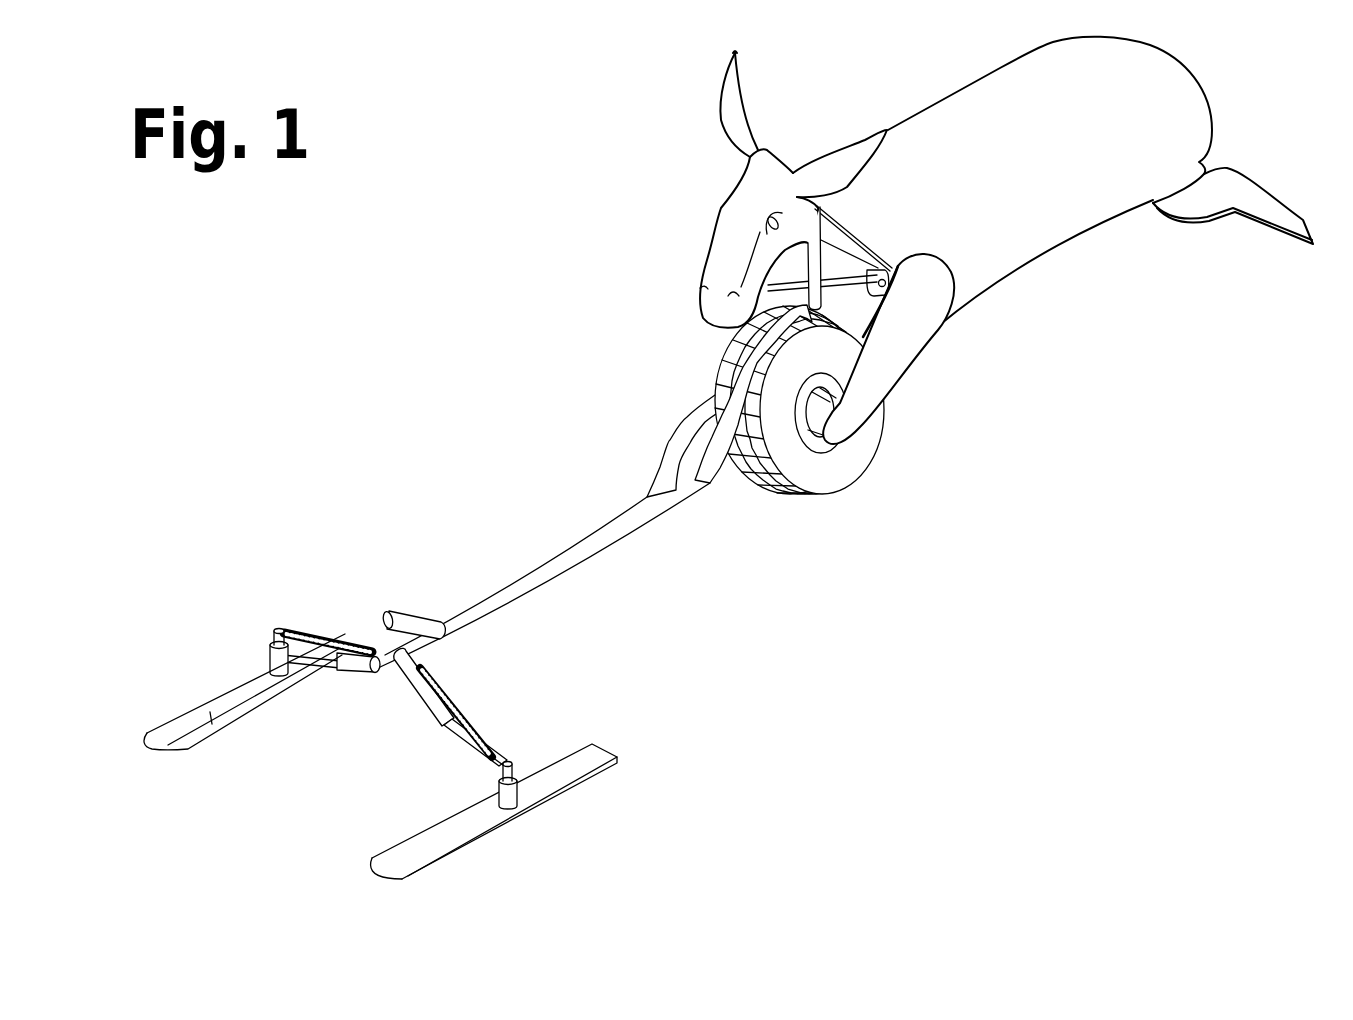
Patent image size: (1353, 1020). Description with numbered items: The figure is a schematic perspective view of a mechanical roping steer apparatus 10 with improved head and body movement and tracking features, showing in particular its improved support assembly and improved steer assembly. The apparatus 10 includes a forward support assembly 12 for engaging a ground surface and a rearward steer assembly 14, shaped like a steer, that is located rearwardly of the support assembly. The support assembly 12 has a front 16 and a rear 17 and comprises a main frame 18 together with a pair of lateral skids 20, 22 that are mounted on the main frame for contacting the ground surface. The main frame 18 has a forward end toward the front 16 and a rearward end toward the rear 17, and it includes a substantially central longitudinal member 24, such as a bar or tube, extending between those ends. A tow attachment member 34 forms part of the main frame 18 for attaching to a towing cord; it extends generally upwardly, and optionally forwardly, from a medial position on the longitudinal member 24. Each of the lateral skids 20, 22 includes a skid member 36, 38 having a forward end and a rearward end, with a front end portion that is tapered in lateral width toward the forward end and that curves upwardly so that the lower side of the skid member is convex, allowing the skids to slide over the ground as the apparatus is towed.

The mechanical roping steer apparatus 10 is at (658, 192).
The forward support assembly 12 is at (588, 614).
The rearward steer assembly 14 is at (1065, 288).
The front 16 is at (320, 713).
The rear 17 is at (697, 518).
The main frame 18 is at (362, 696).
The lateral skid 20 is at (268, 620).
The lateral skid 22 is at (548, 822).
The central longitudinal member 24 is at (538, 573).
The tow attachment member 34 is at (411, 621).
The skid member 36 is at (185, 730).
The skid member 38 is at (415, 857).